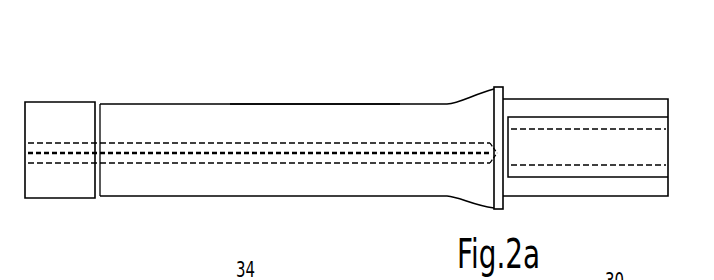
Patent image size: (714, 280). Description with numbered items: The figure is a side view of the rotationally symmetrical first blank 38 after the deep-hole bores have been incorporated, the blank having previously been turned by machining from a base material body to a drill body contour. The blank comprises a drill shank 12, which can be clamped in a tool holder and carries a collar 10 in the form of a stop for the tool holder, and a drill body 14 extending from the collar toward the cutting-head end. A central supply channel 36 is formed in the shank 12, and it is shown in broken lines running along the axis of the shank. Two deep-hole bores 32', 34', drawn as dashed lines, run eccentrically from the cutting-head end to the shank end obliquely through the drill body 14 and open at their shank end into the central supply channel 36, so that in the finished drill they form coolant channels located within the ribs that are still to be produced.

The collar 10 is at (505, 86).
The drill shank 12 is at (641, 98).
The drill body 14 is at (395, 100).
The central supply channel 36 is at (586, 150).
The first blank 38 is at (304, 101).
The deep-hole bore 34' is at (262, 91).
The deep-hole bore 32' is at (262, 205).